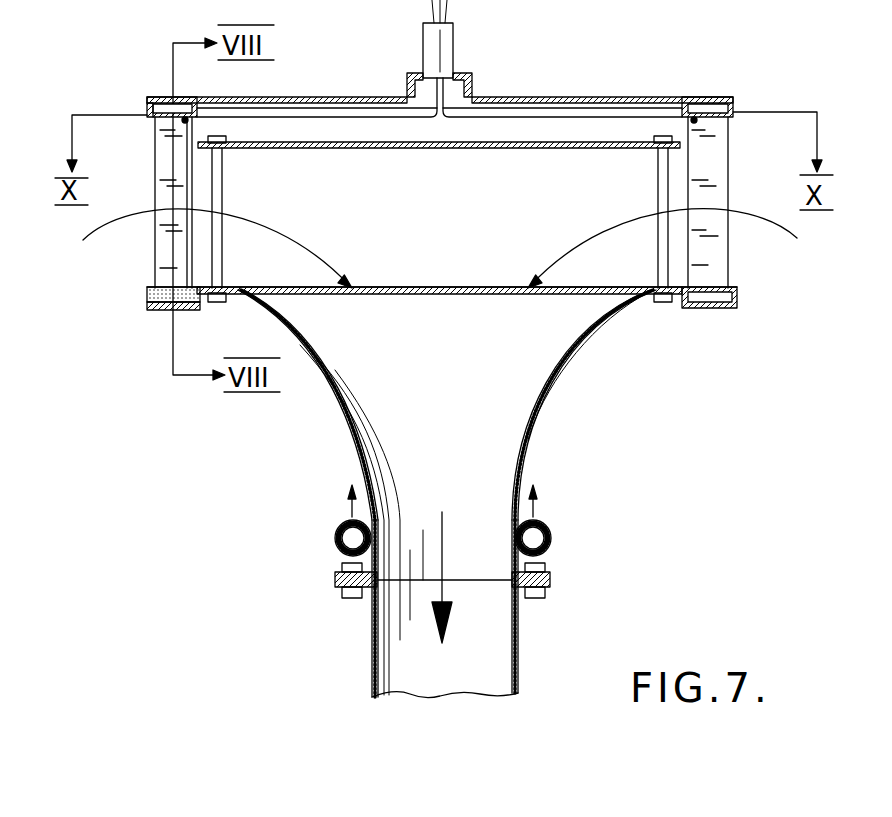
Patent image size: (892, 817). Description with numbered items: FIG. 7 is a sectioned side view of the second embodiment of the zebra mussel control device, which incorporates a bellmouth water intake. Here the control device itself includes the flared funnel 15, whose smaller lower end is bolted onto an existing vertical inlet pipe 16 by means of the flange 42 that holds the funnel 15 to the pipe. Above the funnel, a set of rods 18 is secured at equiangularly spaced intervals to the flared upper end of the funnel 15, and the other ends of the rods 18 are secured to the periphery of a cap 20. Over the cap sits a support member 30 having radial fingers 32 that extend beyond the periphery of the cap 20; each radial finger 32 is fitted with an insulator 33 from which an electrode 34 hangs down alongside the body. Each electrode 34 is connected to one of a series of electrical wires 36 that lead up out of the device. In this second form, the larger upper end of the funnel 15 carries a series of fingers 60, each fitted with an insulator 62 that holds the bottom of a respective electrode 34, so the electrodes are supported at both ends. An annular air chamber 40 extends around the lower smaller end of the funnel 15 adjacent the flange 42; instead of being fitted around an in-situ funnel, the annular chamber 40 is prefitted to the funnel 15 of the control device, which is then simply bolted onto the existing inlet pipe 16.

The flared funnel 15 is at (462, 395).
The vertical inlet pipe 16 is at (482, 667).
The rods 18 is at (222, 267).
The cap 20 is at (240, 150).
The support member 30 is at (240, 99).
The radial fingers 32 is at (160, 97).
The insulator 33 is at (147, 107).
The electrode 34 is at (155, 233).
The electrical wires 36 is at (352, 115).
The annular air chamber 40 is at (552, 537).
The flange 42 is at (550, 578).
The fingers 60 is at (162, 311).
The insulator 62 is at (147, 295).